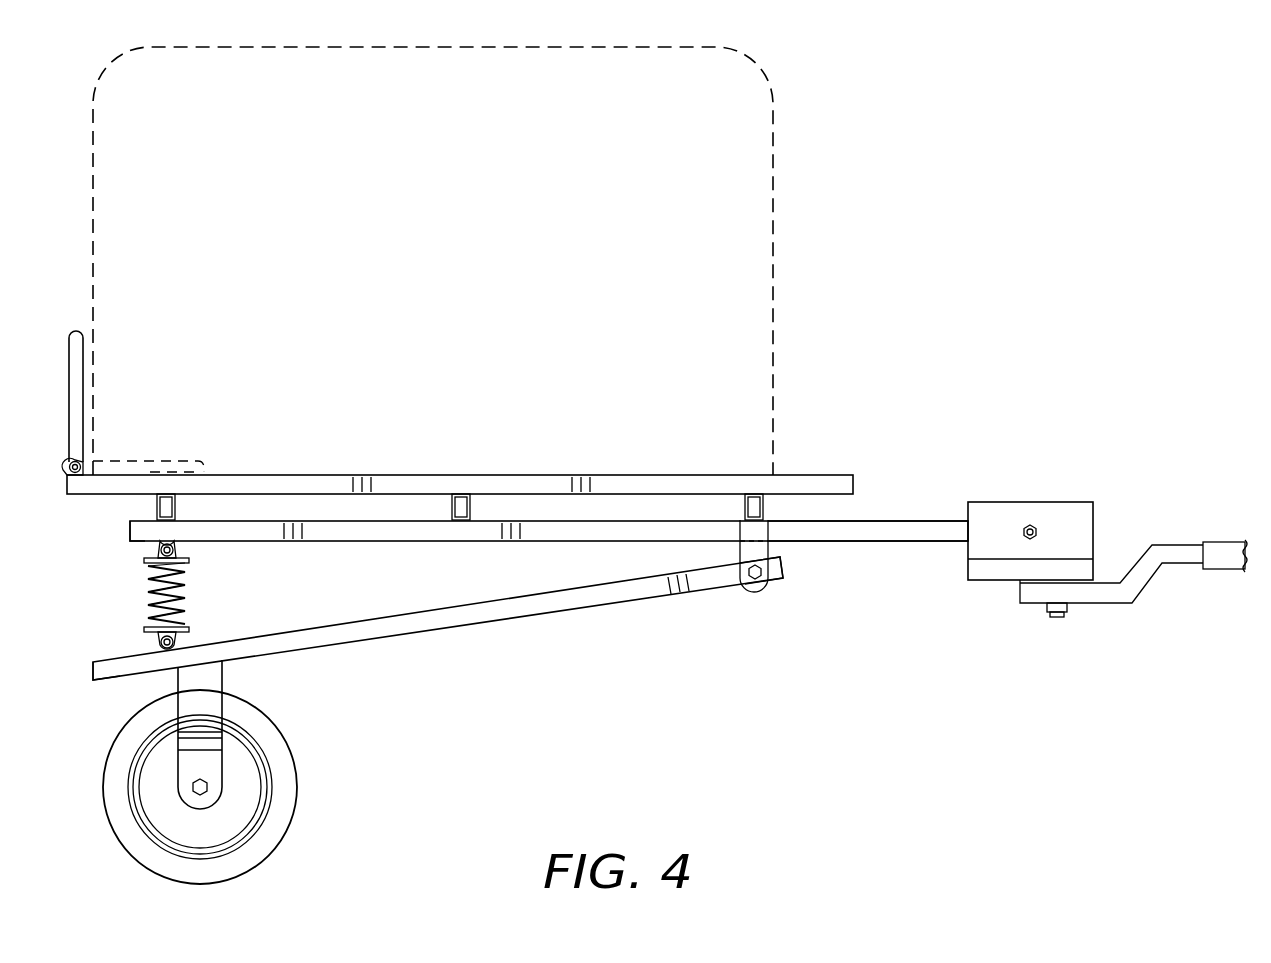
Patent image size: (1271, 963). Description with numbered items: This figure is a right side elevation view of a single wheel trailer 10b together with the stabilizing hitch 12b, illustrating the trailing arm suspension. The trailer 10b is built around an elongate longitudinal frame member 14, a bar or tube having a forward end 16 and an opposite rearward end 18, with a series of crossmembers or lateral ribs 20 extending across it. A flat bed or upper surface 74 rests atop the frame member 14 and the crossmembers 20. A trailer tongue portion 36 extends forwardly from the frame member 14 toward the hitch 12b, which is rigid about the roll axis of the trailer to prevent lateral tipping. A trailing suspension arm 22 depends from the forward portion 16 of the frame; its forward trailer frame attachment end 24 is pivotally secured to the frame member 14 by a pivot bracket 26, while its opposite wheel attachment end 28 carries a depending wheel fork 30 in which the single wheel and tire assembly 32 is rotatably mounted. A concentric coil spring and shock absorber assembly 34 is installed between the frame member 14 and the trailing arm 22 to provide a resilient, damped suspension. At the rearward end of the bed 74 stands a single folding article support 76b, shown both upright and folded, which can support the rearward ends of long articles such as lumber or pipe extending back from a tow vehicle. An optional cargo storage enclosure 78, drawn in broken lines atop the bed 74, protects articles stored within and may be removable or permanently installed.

The single wheel trailer 10b is at (740, 704).
The stabilizing hitch 12b is at (1017, 636).
The frame member 14 is at (416, 541).
The forward end 16 is at (862, 541).
The rearward end 18 is at (132, 528).
The lateral ribs 20 is at (452, 505).
The trailing suspension arm 22 is at (428, 636).
The forward trailer frame attachment end 24 is at (725, 588).
The pivot bracket 26 is at (756, 592).
The wheel attachment end 28 is at (93, 672).
The wheel fork 30 is at (212, 768).
The wheel and tire assembly 32 is at (290, 800).
The concentric coil spring and shock absorber assembly 34 is at (148, 592).
The trailer tongue portion 36 is at (907, 522).
The bed 74 is at (540, 475).
The folding article support 76b is at (82, 352).
The cargo storage enclosure 78 is at (773, 303).